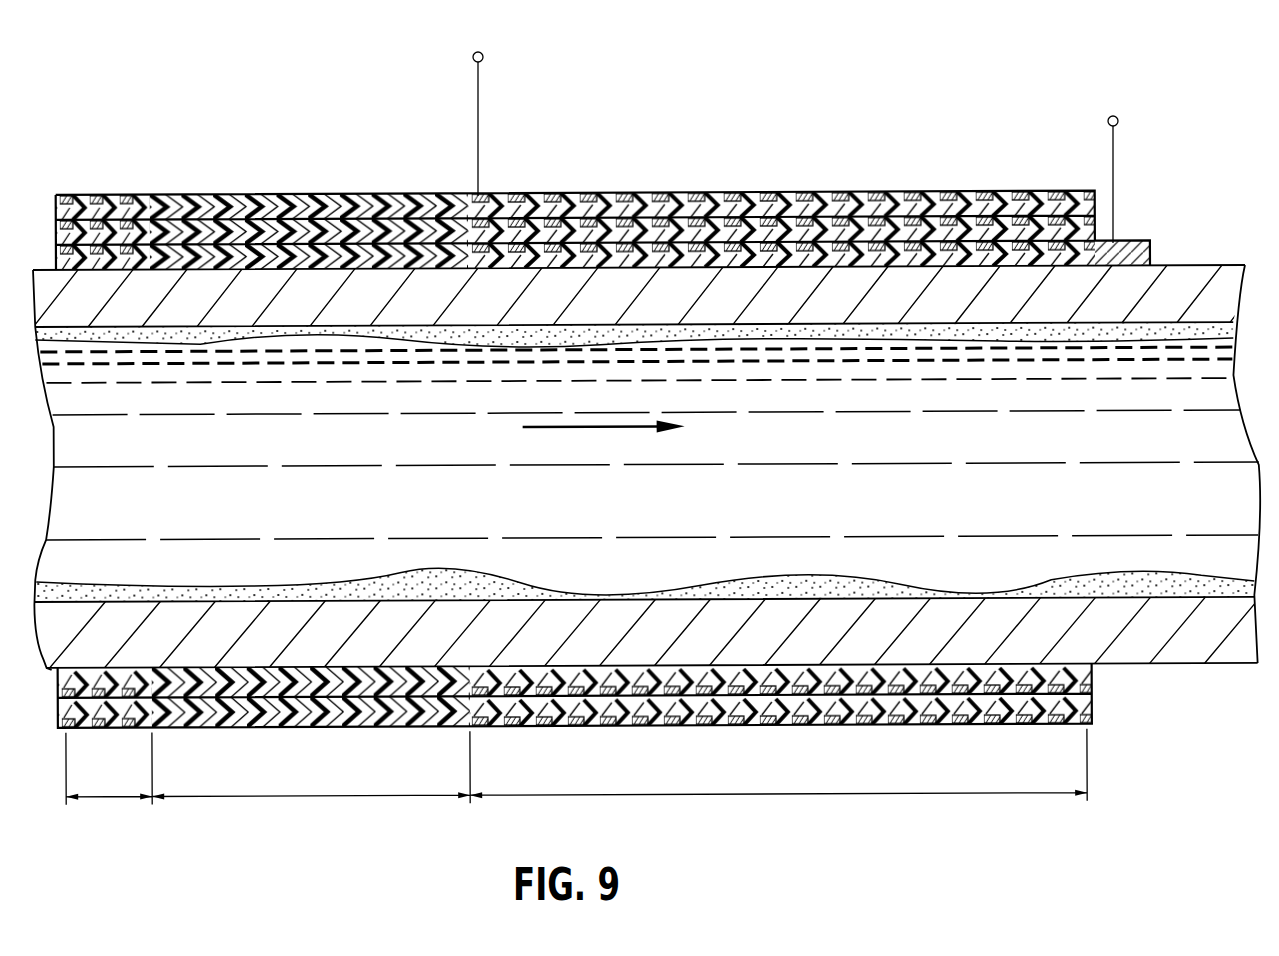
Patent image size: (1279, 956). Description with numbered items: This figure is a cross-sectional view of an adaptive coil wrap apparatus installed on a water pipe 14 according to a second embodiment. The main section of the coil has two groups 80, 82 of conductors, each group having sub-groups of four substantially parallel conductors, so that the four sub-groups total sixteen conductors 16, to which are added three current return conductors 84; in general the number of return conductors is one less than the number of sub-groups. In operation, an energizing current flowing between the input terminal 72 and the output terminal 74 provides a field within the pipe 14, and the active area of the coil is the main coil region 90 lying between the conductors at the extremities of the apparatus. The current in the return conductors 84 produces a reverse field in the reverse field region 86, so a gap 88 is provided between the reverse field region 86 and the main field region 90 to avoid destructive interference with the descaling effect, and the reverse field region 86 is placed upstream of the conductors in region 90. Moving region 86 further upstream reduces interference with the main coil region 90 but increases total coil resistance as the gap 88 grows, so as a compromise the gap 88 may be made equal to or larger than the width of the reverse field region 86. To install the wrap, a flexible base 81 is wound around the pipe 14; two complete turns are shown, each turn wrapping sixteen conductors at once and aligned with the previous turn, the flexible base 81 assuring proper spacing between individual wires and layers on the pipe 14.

The water pipe 14 is at (1185, 663).
The conductors 16 is at (598, 429).
The input terminal 72 is at (483, 57).
The output terminal 74 is at (1118, 122).
The group of conductors 80 is at (604, 410).
The flexible base 81 is at (303, 195).
The group of conductors 82 is at (678, 168).
The current return conductors 84 is at (126, 172).
The reverse field region 86 is at (128, 798).
The gap 88 is at (325, 797).
The main coil region 90 is at (757, 795).